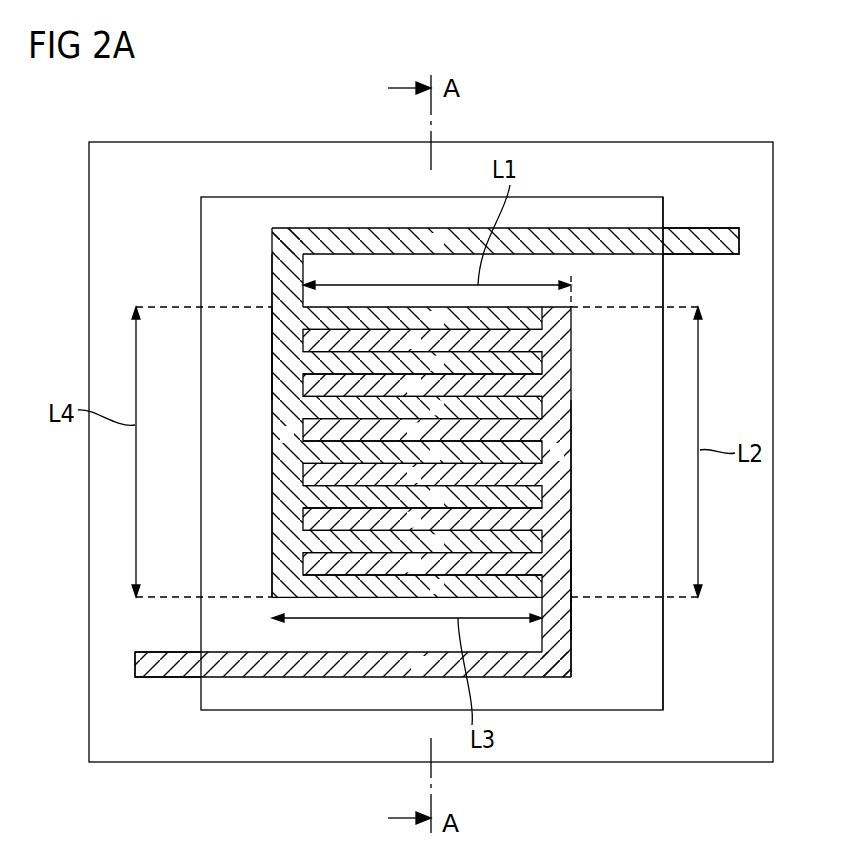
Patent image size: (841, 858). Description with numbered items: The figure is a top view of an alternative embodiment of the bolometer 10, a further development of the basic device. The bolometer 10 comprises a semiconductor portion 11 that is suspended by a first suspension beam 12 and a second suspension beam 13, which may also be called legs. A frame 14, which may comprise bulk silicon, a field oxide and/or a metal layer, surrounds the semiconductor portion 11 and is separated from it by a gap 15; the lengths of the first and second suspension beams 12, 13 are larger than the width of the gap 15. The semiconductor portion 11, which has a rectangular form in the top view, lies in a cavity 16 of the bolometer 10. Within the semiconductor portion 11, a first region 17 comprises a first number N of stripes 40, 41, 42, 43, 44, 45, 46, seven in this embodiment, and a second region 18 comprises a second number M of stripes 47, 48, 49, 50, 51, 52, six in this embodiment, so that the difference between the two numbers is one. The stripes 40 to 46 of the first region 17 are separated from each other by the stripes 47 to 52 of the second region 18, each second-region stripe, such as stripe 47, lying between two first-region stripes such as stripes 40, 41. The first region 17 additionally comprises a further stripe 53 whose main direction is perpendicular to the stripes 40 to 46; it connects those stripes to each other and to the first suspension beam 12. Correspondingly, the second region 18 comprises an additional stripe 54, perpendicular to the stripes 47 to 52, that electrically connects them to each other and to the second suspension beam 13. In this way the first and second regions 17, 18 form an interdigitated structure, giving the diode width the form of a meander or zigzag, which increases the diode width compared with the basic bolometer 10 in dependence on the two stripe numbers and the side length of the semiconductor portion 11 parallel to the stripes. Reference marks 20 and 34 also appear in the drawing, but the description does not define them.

The bolometer 10 is at (399, 421).
The semiconductor portion 11 is at (275, 430).
The first suspension beam 12 is at (345, 228).
The second suspension beam 13 is at (345, 677).
The frame 14 is at (89, 480).
The gap 15 is at (215, 397).
The cavity 16 is at (631, 440).
The first region 17 is at (275, 518).
The second region 18 is at (572, 502).
The second electrode (p-type contact bar) 20 is at (564, 325).
The contact terminal 34 is at (578, 235).
The stripe of the first region 40 is at (300, 318).
The stripe of the first region 41 is at (300, 362).
The stripe of the first region 42 is at (300, 407).
The stripe of the first region 43 is at (300, 452).
The stripe of the first region 44 is at (300, 496).
The stripe of the first region 45 is at (300, 540).
The stripe of the first region 46 is at (300, 585).
The stripe of the second region 47 is at (525, 345).
The stripe of the second region 48 is at (525, 380).
The stripe of the second region 49 is at (525, 425).
The stripe of the second region 50 is at (525, 470).
The stripe of the second region 51 is at (525, 515).
The stripe of the second region 52 is at (530, 563).
The further stripe 53 is at (290, 350).
The additional stripe 54 is at (562, 587).